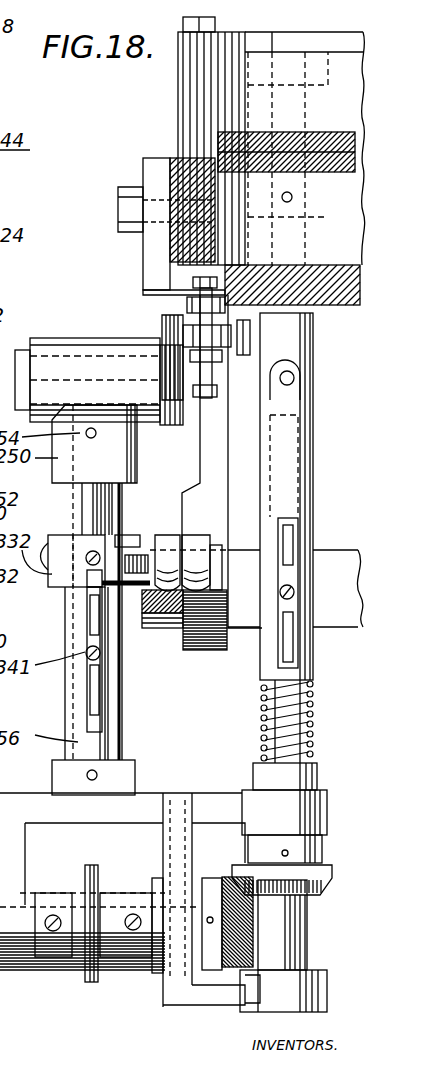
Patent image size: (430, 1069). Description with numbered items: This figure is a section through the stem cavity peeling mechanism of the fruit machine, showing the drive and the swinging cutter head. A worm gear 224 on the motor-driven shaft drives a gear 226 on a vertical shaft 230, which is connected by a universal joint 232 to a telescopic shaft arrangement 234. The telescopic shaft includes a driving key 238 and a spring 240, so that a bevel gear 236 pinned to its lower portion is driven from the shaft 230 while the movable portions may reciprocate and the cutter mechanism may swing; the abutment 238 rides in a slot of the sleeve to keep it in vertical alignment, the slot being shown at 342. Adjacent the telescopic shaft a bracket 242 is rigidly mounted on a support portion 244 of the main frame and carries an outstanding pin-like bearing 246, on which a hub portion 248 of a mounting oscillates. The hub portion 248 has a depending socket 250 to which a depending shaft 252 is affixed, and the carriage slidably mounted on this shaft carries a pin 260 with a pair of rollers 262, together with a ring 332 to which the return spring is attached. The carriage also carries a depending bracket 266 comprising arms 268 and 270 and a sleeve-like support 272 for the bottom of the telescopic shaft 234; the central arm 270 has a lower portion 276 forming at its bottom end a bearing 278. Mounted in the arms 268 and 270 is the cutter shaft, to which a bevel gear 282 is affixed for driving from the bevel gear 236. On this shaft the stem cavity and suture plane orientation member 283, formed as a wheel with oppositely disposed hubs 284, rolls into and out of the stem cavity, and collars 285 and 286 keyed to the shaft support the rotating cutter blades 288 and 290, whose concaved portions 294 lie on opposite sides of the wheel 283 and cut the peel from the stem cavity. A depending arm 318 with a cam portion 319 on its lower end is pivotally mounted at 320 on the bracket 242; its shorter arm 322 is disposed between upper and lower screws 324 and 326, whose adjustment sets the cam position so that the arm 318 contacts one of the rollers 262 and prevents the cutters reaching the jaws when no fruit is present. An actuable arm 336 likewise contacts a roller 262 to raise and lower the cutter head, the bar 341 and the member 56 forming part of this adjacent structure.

The vertical shaft 230 is at (299, 40).
The worm gear 224 is at (350, 128).
The gear 226 is at (215, 137).
The support portion 244 is at (170, 173).
The bracket 242 is at (150, 248).
The upper screw 324 is at (193, 282).
The shorter arm 322 is at (200, 335).
The lower screw 326 is at (205, 398).
The pivot 320 is at (232, 332).
The universal joint 232 is at (297, 378).
The depending arm 318 is at (215, 437).
The telescopic shaft arrangement 234 is at (292, 477).
The slot screw 342 is at (293, 597).
The driving key 238 is at (287, 607).
The spring 240 is at (262, 718).
The sleeve-like support 272 is at (328, 800).
The bevel gear 236 is at (313, 870).
The bearing 278 is at (346, 964).
The lower portion 276 is at (173, 995).
The cutter blade 290 is at (132, 888).
The depending bracket 266 is at (147, 803).
The vertical member 56 is at (93, 621).
The arm 268 is at (15, 847).
The central arm 270 is at (183, 847).
The hubs 284 is at (78, 893).
The stem cavity and suture plane orientation member 283 is at (88, 982).
The concaved portions 294 is at (97, 880).
The collar 285 is at (54, 950).
The cutter blade 288 is at (87, 975).
The collar 286 is at (226, 912).
The bevel gear 282 is at (212, 925).
The depending socket 250 is at (94, 444).
The depending shaft 252 is at (110, 497).
The hub portion 248 is at (43, 348).
The pin-like bearing 246 is at (80, 370).
The ring 332 is at (96, 561).
The slotted bar 341 is at (94, 659).
The rollers 262 is at (193, 534).
The pin 260 is at (217, 547).
The actuable arm 336 is at (160, 612).
The cam portion 319 is at (200, 652).